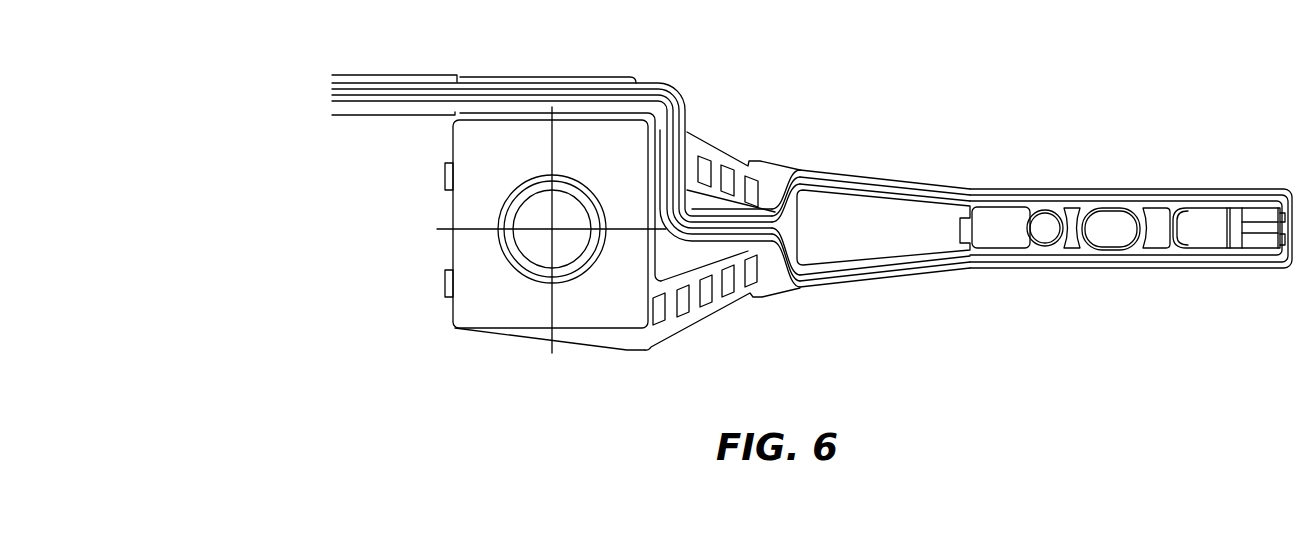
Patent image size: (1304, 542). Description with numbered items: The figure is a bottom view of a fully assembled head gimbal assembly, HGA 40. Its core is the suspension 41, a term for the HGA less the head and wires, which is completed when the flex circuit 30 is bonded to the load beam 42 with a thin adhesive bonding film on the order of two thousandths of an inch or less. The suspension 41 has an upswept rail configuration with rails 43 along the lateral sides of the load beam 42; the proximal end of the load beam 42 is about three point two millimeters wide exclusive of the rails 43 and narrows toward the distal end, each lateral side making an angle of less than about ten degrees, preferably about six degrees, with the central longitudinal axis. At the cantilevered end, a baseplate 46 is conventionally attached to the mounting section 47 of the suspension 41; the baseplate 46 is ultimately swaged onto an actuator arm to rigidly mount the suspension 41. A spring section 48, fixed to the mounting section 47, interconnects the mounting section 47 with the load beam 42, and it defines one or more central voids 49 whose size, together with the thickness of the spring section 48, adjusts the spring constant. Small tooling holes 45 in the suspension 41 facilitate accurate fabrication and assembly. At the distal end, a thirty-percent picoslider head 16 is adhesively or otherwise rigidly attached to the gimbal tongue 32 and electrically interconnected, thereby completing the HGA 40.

The HGA 40 is at (829, 94).
The spring section 48 is at (710, 140).
The central voids 49 is at (690, 266).
The baseplate 46 is at (503, 318).
The mounting section 47 is at (603, 348).
The load beam 42 is at (773, 165).
The rails 43 is at (863, 173).
The suspension 41 is at (886, 285).
The flex circuit 30 is at (1054, 184).
The tooling holes 45 is at (1112, 240).
The gimbal tongue 32 is at (1221, 248).
The picoslider head 16 is at (1256, 207).